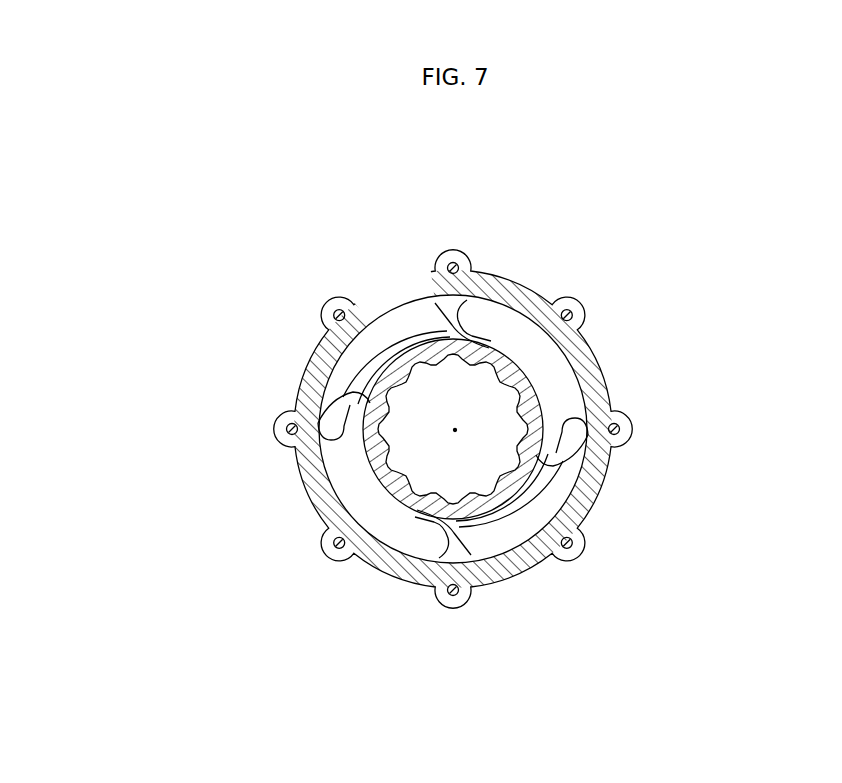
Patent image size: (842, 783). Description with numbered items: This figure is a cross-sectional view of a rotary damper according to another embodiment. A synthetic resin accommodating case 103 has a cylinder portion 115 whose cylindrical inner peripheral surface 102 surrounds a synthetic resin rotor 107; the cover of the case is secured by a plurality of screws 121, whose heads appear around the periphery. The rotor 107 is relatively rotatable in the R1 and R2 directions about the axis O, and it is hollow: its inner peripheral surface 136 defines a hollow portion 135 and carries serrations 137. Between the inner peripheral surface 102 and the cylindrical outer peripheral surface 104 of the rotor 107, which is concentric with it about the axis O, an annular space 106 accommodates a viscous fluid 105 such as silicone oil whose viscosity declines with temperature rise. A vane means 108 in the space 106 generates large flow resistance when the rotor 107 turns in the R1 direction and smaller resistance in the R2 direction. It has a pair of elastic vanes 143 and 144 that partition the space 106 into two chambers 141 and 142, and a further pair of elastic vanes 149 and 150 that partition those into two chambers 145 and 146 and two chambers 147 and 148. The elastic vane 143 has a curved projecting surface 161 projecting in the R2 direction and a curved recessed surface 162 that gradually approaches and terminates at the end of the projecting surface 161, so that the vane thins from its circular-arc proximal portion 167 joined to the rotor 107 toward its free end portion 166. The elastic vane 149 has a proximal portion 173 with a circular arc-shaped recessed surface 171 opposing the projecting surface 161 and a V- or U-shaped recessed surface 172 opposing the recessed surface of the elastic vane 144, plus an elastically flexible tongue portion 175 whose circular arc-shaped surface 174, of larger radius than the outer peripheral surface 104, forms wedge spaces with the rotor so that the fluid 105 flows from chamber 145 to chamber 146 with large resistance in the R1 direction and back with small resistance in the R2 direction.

The cylindrical inner peripheral surface 102 is at (560, 357).
The accommodating case 103 is at (287, 460).
The cylindrical outer peripheral surface 104 is at (336, 522).
The viscous fluid 105 is at (551, 300).
The space 106 is at (548, 520).
The rotor 107 is at (492, 545).
The vane means 108 is at (578, 498).
The cylinder portion 115 is at (560, 366).
The screws 121 is at (332, 305).
The hollow portion 135 is at (410, 445).
The inner peripheral surface 136 is at (370, 505).
The serrations 137 is at (373, 334).
The chamber 141 is at (377, 337).
The chamber 142 is at (522, 548).
The elastic vane 143 is at (302, 398).
The elastic vane 144 is at (590, 488).
The chamber 145 is at (590, 365).
The chamber 146 is at (324, 327).
The chamber 147 is at (362, 506).
The chamber 148 is at (580, 532).
The elastic vane 149 is at (480, 330).
The elastic vane 150 is at (418, 528).
The curved projecting surface 161 is at (345, 372).
The curved recessed surface 162 is at (318, 432).
The free end portion 166 is at (277, 412).
The proximal portion 167 is at (365, 370).
The circular arc-shaped recessed surface 171 is at (418, 356).
The V- or U-shaped recessed surface 172 is at (466, 314).
The proximal portion 173 is at (450, 317).
The circular arc-shaped surface 174 is at (520, 323).
The tongue portion 175 is at (508, 322).
The axis O is at (456, 430).
The R1 direction R1 is at (483, 231).
The R2 direction R2 is at (423, 624).